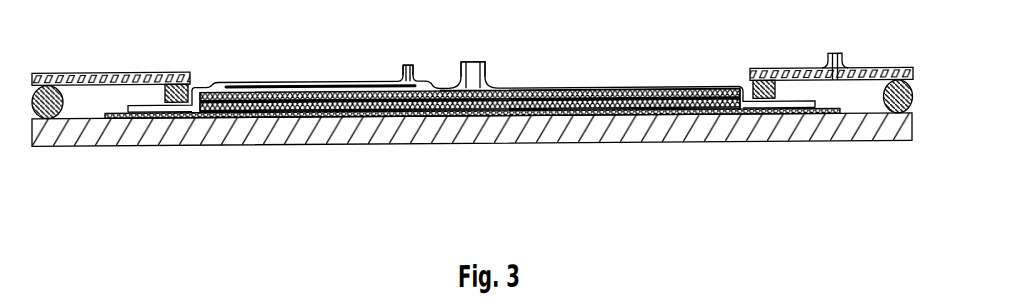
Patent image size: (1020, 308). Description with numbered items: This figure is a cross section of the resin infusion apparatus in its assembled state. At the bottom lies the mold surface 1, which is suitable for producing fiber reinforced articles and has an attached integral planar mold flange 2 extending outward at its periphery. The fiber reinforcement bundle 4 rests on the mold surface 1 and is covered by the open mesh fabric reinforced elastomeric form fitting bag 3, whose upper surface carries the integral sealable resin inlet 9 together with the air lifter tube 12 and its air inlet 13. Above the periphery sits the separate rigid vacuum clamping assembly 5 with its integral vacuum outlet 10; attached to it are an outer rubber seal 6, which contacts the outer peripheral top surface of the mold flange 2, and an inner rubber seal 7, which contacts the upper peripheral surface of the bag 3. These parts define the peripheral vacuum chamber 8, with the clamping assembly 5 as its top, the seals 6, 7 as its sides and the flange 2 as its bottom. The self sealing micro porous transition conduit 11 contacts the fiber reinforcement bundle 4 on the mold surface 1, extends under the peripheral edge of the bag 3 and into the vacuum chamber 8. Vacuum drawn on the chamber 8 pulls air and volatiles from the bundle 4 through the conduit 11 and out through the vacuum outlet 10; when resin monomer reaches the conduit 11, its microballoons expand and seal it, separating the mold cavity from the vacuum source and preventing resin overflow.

The mold surface 1 is at (466, 108).
The integral planar mold flange 2 is at (78, 124).
The open mesh fabric reinforced elastomeric form fitting bag 3 is at (652, 90).
The fiber reinforcement bundle 4 is at (556, 108).
The rigid vacuum clamping assembly 5 is at (97, 73).
The outer rubber seal 6 is at (181, 88).
The inner rubber seal 7 is at (25, 88).
The peripheral vacuum chamber 8 is at (103, 101).
The sealable resin inlet 9 is at (473, 63).
The integral vacuum outlet 10 is at (835, 57).
The self sealing micro porous transition conduit 11 is at (118, 119).
The air lifter tube 12 is at (313, 82).
The air inlet 13 is at (408, 66).